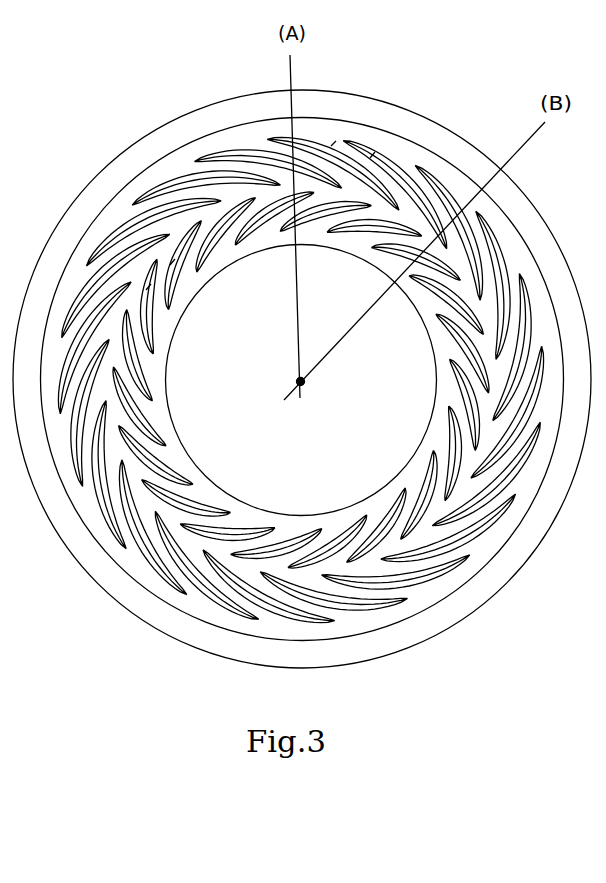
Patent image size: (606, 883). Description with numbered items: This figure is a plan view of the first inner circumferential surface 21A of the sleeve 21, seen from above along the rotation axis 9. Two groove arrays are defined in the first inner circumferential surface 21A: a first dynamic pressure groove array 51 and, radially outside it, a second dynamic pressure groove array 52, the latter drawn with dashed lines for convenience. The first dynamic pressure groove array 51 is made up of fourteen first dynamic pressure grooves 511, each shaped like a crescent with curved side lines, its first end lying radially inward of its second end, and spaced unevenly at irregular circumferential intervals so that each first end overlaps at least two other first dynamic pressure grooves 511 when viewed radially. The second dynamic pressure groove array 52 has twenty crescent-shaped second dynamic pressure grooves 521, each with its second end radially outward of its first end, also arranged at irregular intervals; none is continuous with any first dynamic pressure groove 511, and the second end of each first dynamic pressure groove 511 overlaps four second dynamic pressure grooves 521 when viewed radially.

The sleeve 21 is at (457, 130).
The first inner circumferential surface 21A is at (173, 158).
The second dynamic pressure groove array 52 is at (256, 140).
The second dynamic pressure groove 521 is at (372, 155).
The first dynamic pressure groove array 51 is at (217, 205).
The first dynamic pressure groove 511 is at (172, 262).
The rotation axis 9 is at (306, 382).